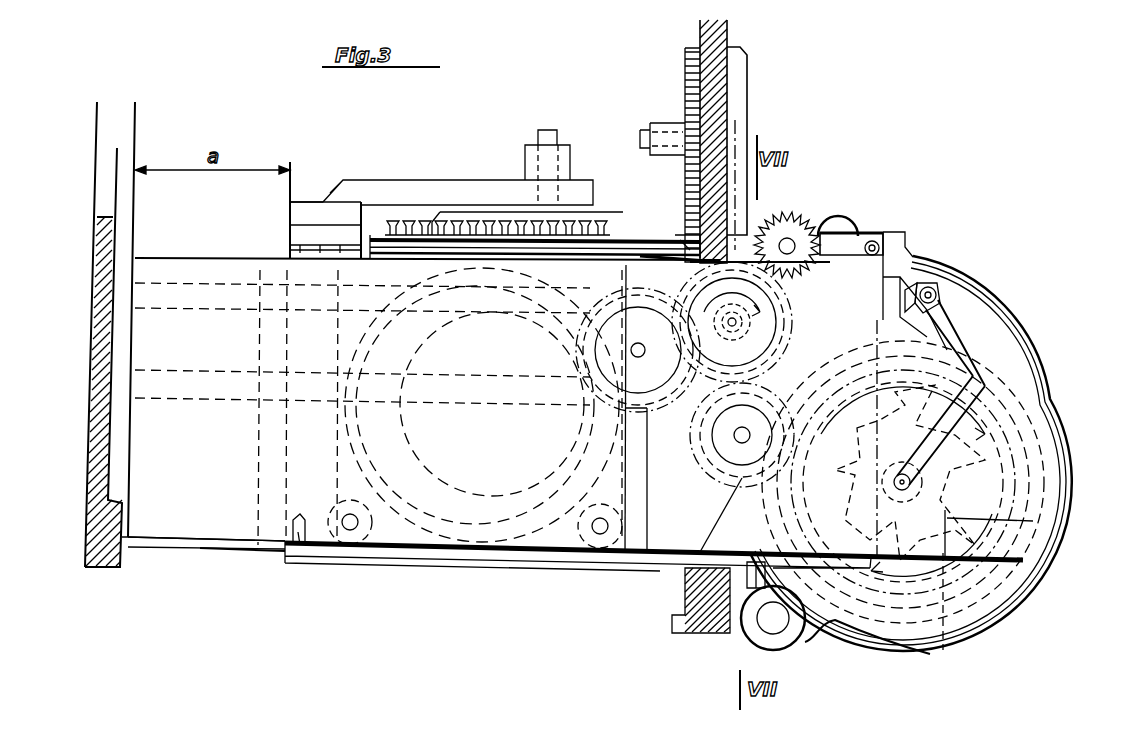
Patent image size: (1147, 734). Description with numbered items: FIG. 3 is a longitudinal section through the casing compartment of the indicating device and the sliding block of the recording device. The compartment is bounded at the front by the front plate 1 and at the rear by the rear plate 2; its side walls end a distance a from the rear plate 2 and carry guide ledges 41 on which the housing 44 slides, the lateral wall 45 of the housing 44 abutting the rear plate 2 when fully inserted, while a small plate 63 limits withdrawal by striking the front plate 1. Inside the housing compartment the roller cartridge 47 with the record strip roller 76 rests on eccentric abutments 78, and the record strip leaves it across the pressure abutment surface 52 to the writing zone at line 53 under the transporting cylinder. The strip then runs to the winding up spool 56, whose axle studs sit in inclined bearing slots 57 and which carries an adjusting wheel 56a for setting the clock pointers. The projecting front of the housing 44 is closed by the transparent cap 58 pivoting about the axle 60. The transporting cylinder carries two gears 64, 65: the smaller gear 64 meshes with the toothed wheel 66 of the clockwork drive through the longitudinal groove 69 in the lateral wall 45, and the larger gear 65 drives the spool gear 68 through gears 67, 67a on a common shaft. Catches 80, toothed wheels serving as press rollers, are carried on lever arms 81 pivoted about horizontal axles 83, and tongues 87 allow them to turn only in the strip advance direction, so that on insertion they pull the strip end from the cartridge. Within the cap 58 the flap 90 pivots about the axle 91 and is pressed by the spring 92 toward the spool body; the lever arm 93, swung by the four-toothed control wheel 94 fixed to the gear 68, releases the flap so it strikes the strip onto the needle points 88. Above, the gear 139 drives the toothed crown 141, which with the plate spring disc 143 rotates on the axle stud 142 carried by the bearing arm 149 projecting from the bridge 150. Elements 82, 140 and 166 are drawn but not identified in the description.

The front plate 1 is at (715, 70).
The rear plate 2 is at (93, 243).
The guide ledge 41 is at (455, 556).
The housing 44 is at (218, 528).
The lateral wall 45 is at (206, 539).
The roller cartridge 47 is at (482, 546).
The pressure abutment surface 52 is at (690, 245).
The writing zone line 53 is at (735, 150).
The winding up spool 56 is at (1033, 521).
The adjusting wheel 56a is at (973, 593).
The bearing slot 57 is at (965, 385).
The cap 58 is at (1023, 588).
The axle 60 is at (780, 620).
The small plate 63 is at (237, 548).
The gear 64 is at (790, 335).
The gear 65 is at (770, 310).
The toothed wheel 66 is at (638, 445).
The gear 67 is at (722, 462).
The gear 67a is at (700, 560).
The gear 68 is at (1015, 430).
The longitudinal groove 69 is at (203, 323).
The record strip roller 76 is at (518, 545).
The abutment 78 is at (350, 532).
The catch 80 is at (785, 215).
The lever arm 81 is at (875, 241).
The plate 82 is at (815, 235).
The horizontal axle 83 is at (897, 231).
The tongue 87 is at (838, 225).
The needle point 88 is at (942, 617).
The plate 90 is at (937, 302).
The horizontal axle 91 is at (940, 283).
The spring 92 is at (920, 312).
The lever arm 93 is at (955, 345).
The control wheel 94 is at (1040, 472).
The gear 139 is at (688, 70).
The slide block 140 is at (645, 130).
The toothed crown 141 is at (432, 221).
The axle stud 142 is at (548, 130).
The plate spring disc 143 is at (372, 237).
The bearing arm 149 is at (497, 190).
The bridge 150 is at (302, 217).
The stop 166 is at (688, 222).